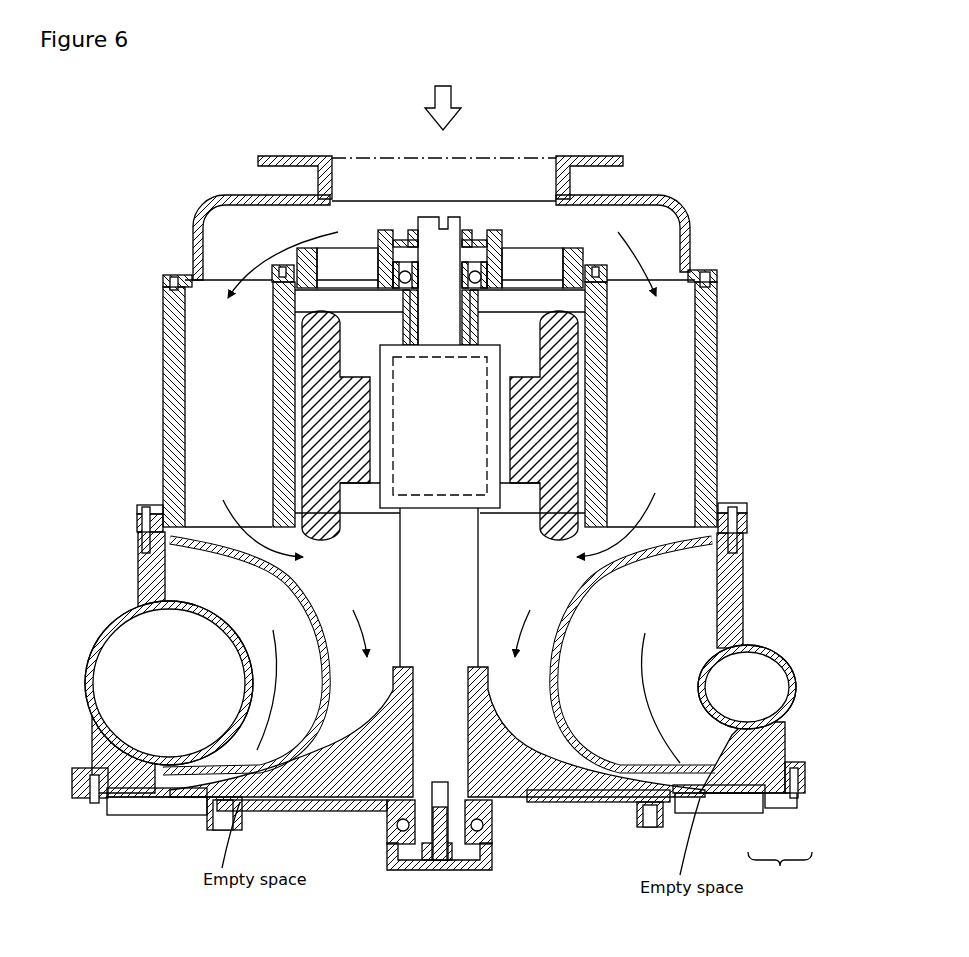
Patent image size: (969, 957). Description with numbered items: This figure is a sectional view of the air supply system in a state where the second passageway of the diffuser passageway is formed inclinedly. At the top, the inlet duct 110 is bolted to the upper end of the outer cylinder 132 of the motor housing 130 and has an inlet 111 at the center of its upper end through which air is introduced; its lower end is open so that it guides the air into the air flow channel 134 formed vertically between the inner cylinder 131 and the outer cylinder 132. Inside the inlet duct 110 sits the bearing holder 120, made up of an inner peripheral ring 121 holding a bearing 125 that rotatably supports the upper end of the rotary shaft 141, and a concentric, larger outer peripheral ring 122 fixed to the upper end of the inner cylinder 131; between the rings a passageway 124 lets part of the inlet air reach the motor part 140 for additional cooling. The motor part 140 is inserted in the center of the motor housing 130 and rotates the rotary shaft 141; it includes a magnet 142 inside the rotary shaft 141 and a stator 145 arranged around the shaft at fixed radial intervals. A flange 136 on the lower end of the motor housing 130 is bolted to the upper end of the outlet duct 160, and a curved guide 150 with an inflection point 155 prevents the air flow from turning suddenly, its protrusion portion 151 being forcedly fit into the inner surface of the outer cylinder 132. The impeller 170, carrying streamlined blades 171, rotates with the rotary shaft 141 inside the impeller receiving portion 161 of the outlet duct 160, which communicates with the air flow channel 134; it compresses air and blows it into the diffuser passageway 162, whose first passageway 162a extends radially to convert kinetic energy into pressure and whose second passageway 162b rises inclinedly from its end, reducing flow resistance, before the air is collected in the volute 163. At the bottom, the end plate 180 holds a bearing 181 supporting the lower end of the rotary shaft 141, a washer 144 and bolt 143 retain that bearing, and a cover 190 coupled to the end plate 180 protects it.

The inlet duct 110 is at (192, 205).
The inlet 111 is at (333, 163).
The bearing holder 120 is at (268, 271).
The inner peripheral ring 121 is at (533, 262).
The outer peripheral ring 122 is at (563, 213).
The passageway 124 is at (565, 187).
The bearing 125 is at (492, 232).
The motor housing 130 is at (395, 404).
The inner cylinder 131 is at (285, 408).
The outer cylinder 132 is at (173, 440).
The air flow channel 134 is at (227, 467).
The flange 136 is at (746, 506).
The motor part 140 is at (283, 355).
The rotary shaft 141 is at (455, 224).
The magnet 142 is at (497, 423).
The bolt 143 is at (447, 870).
The washer 144 is at (492, 858).
The stator 145 is at (607, 348).
The guide 150 is at (743, 592).
The protrusion portion 151 is at (738, 528).
The inflection point 155 is at (140, 567).
The outlet duct 160 is at (137, 592).
The impeller receiving portion 161 is at (583, 766).
The diffuser passageway 162 is at (780, 871).
The first passageway 162a is at (695, 795).
The second passageway 162b is at (793, 737).
The volute 163 is at (133, 695).
The impeller 170 is at (353, 783).
The streamlined blades 171 is at (288, 802).
The end plate 180 is at (158, 798).
The bearing 181 is at (413, 858).
The cover 190 is at (457, 868).